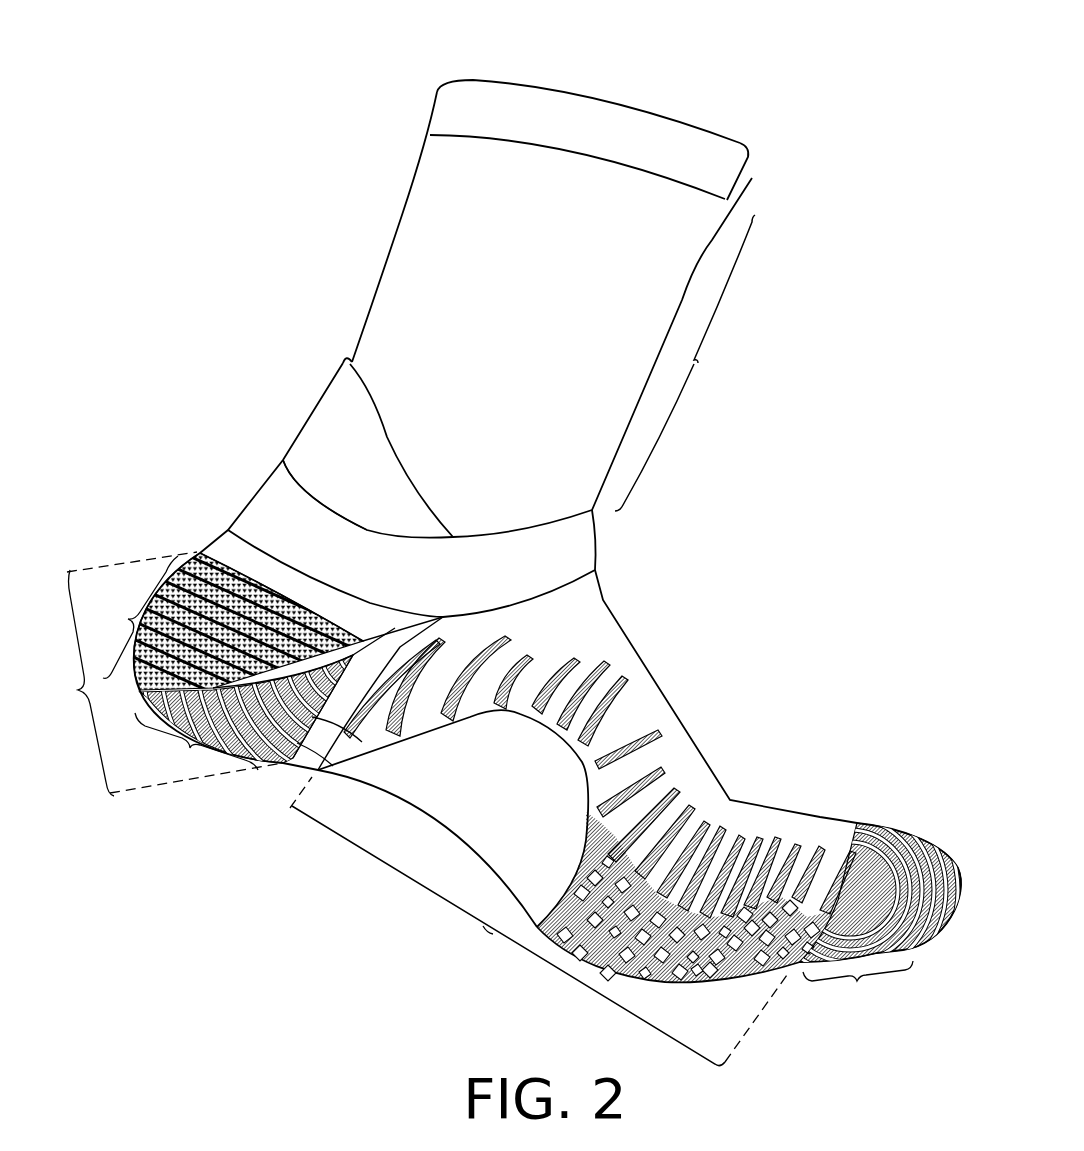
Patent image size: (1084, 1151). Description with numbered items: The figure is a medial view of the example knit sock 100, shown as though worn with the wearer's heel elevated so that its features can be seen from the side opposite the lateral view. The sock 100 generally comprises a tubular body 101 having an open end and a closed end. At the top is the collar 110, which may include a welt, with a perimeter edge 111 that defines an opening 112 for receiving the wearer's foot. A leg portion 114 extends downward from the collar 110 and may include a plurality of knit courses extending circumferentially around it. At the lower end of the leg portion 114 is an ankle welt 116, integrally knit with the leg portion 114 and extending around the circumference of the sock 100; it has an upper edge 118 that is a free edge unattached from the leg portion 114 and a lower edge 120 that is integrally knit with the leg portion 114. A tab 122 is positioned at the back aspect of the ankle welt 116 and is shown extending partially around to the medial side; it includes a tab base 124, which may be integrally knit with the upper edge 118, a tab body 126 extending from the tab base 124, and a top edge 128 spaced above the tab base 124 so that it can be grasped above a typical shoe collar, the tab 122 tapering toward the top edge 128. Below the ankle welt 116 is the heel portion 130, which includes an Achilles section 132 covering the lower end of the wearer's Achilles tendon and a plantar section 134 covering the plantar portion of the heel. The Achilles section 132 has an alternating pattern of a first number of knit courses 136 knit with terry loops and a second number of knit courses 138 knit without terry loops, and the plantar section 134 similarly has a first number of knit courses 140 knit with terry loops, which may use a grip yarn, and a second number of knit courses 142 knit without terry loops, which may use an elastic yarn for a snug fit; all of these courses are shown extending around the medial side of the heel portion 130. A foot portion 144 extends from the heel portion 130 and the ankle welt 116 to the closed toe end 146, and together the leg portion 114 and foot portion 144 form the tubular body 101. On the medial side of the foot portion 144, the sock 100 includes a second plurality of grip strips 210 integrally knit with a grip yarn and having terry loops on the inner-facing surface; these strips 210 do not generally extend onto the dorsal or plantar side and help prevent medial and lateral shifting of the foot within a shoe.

The knit sock 100 is at (642, 457).
The tubular body 101 is at (749, 689).
The collar 110 is at (752, 178).
The perimeter edge 111 is at (740, 143).
The opening 112 is at (588, 76).
The leg portion 114 is at (685, 363).
The ankle welt 116 is at (607, 540).
The upper edge 118 is at (558, 527).
The lower edge 120 is at (557, 592).
The tab 122 is at (271, 444).
The tab base 124 is at (325, 492).
The tab body 126 is at (341, 450).
The top edge 128 is at (311, 332).
The heel portion 130 is at (162, 674).
The Achilles section 132 is at (225, 658).
The plantar section 134 is at (354, 655).
The first number of knit courses 136 is at (318, 617).
The second number of knit courses 138 is at (262, 582).
The first number of knit courses 140 is at (320, 769).
The second number of knit courses 142 is at (380, 747).
The foot portion 144 is at (535, 887).
The closed toe end 146 is at (851, 894).
The second plurality of grip strips 210 is at (653, 702).